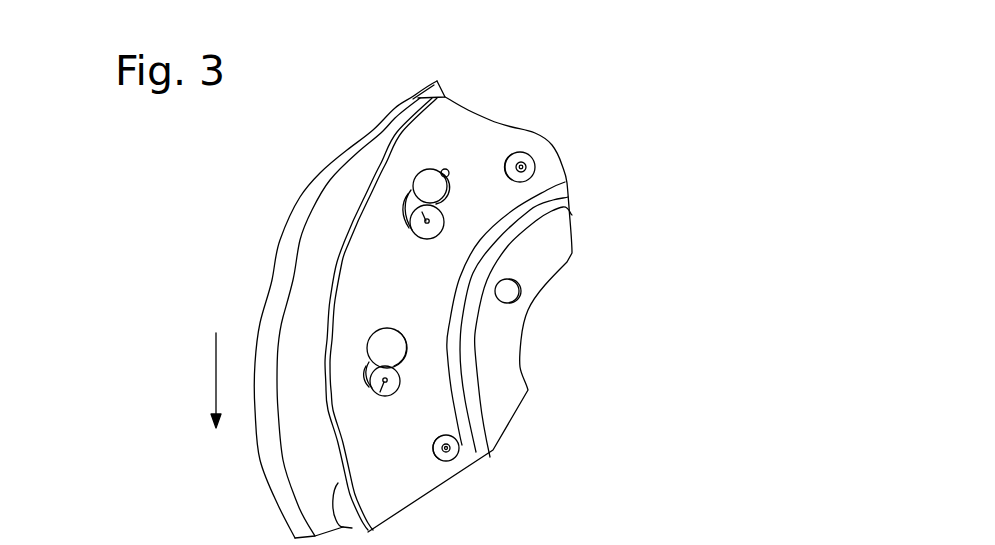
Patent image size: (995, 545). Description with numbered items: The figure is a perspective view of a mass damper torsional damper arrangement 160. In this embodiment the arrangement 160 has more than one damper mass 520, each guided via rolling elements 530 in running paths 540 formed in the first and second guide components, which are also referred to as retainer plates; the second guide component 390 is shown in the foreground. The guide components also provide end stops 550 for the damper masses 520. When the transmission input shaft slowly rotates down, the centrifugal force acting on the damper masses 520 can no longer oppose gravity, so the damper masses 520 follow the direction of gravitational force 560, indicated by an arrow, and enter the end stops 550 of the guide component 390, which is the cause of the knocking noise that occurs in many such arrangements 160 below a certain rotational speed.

The mass damper torsional damper arrangement 160 is at (643, 50).
The second guide component 390 is at (388, 198).
The damper mass 520 is at (322, 188).
The rolling element 530 is at (422, 212).
The running path 540 is at (446, 172).
The end stop 550 is at (370, 385).
The direction of gravitational force 560 is at (216, 373).